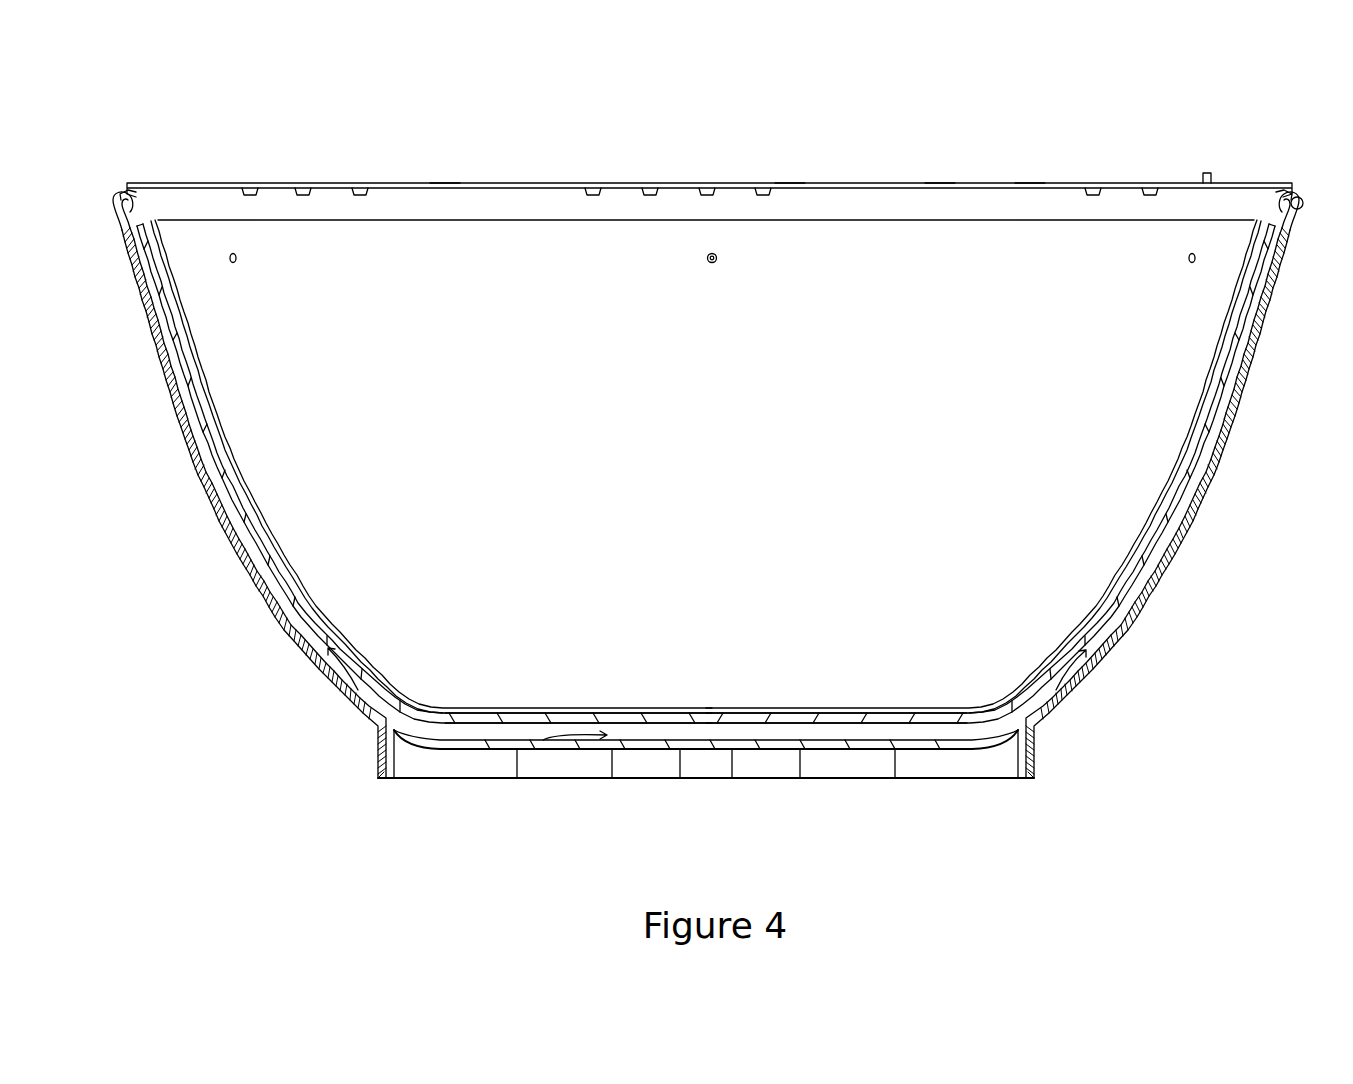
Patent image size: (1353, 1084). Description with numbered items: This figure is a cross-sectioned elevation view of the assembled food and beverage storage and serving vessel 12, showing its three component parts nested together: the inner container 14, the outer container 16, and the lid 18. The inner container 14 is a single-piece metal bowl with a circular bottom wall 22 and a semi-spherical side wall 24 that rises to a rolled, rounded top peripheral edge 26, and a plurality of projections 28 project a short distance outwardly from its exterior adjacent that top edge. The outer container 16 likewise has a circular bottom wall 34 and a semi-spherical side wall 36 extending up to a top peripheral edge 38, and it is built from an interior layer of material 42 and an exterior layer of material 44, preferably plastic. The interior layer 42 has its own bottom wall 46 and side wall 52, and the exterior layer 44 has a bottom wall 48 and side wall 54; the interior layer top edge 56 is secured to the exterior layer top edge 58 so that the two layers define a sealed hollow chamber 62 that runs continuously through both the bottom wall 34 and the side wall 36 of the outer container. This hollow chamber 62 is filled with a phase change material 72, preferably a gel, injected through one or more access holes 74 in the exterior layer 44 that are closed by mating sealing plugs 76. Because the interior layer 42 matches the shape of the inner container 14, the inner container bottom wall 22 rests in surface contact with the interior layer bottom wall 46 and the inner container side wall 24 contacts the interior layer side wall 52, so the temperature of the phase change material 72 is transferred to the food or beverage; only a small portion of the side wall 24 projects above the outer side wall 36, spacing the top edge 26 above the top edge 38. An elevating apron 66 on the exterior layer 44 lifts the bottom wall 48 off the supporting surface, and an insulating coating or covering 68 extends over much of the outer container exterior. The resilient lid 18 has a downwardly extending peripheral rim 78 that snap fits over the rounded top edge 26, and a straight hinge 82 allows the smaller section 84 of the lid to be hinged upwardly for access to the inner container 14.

The food and beverage storage and serving vessel 12 is at (709, 123).
The inner container 14 is at (276, 580).
The outer container 16 is at (302, 667).
The lid 18 is at (449, 168).
The bottom wall 22 is at (708, 777).
The side wall 24 is at (1011, 471).
The top peripheral edge 26 is at (1275, 179).
The projections 28 is at (233, 252).
The bottom wall 34 is at (706, 801).
The side wall 36 is at (1161, 503).
The top peripheral edge 38 is at (940, 183).
The interior layer of material 42 is at (1170, 503).
The exterior layer of material 44 is at (1169, 503).
The bottom wall 46 is at (831, 727).
The bottom wall 48 is at (706, 801).
The side wall 52 is at (1103, 620).
The side wall 54 is at (1167, 567).
The top edge 56 is at (1291, 198).
The top edge 58 is at (1266, 282).
The hollow chamber 62 is at (358, 697).
The elevating apron 66 is at (417, 767).
The insulating coating or covering 68 is at (254, 503).
The phase change material 72 is at (404, 471).
The access holes 74 is at (706, 796).
The sealing plugs 76 is at (705, 748).
The peripheral rim 78 is at (122, 192).
The hinge 82 is at (788, 183).
The smaller section 84 is at (1030, 183).